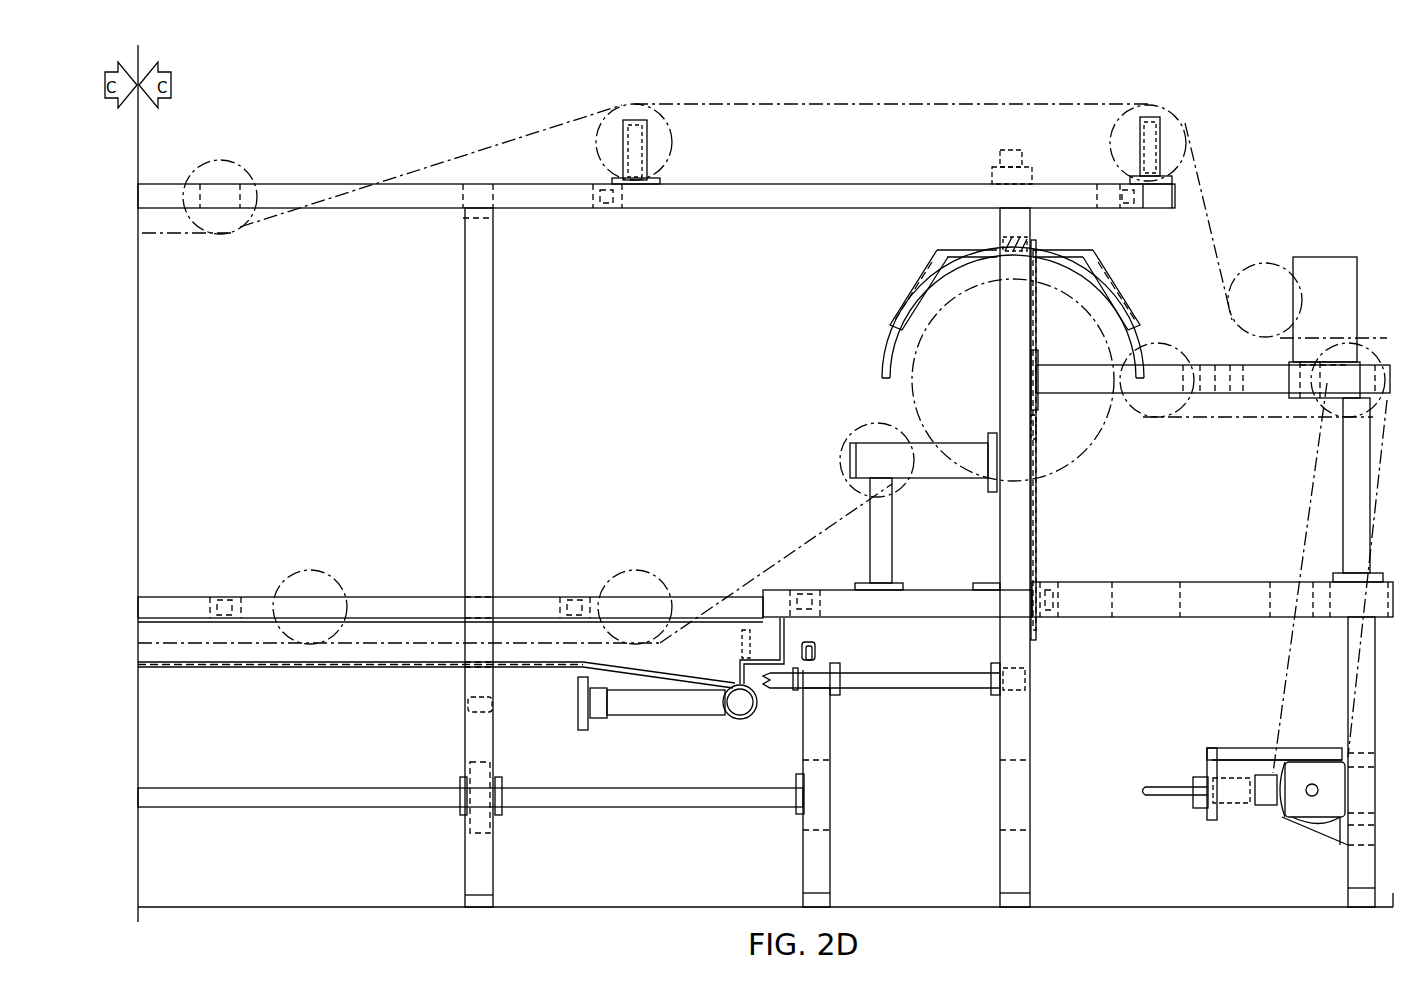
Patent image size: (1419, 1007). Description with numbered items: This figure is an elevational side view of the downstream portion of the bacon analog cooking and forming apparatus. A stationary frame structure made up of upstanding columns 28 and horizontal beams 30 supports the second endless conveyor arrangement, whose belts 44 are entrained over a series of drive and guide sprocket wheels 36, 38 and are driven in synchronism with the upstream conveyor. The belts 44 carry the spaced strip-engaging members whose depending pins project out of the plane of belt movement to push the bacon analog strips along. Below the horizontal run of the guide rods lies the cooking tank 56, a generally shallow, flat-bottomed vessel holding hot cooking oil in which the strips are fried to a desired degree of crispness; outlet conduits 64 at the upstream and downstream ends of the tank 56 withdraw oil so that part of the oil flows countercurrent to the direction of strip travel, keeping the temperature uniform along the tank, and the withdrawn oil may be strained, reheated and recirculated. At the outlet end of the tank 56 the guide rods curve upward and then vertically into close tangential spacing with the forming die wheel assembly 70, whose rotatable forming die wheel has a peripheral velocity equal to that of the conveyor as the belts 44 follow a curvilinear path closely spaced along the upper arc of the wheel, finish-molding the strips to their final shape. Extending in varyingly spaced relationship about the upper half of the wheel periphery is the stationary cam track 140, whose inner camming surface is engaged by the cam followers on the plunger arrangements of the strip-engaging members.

The upstanding columns 28 is at (494, 394).
The horizontal beams 30 is at (735, 208).
The drive sprocket wheel 36 is at (1375, 347).
The guide sprocket wheel 38 is at (248, 168).
The belts 44 is at (838, 106).
The cooking tank 56 is at (345, 668).
The outlet conduits 64 is at (742, 720).
The forming die wheel assembly 70 is at (1055, 470).
The stationary cam track 140 is at (888, 340).